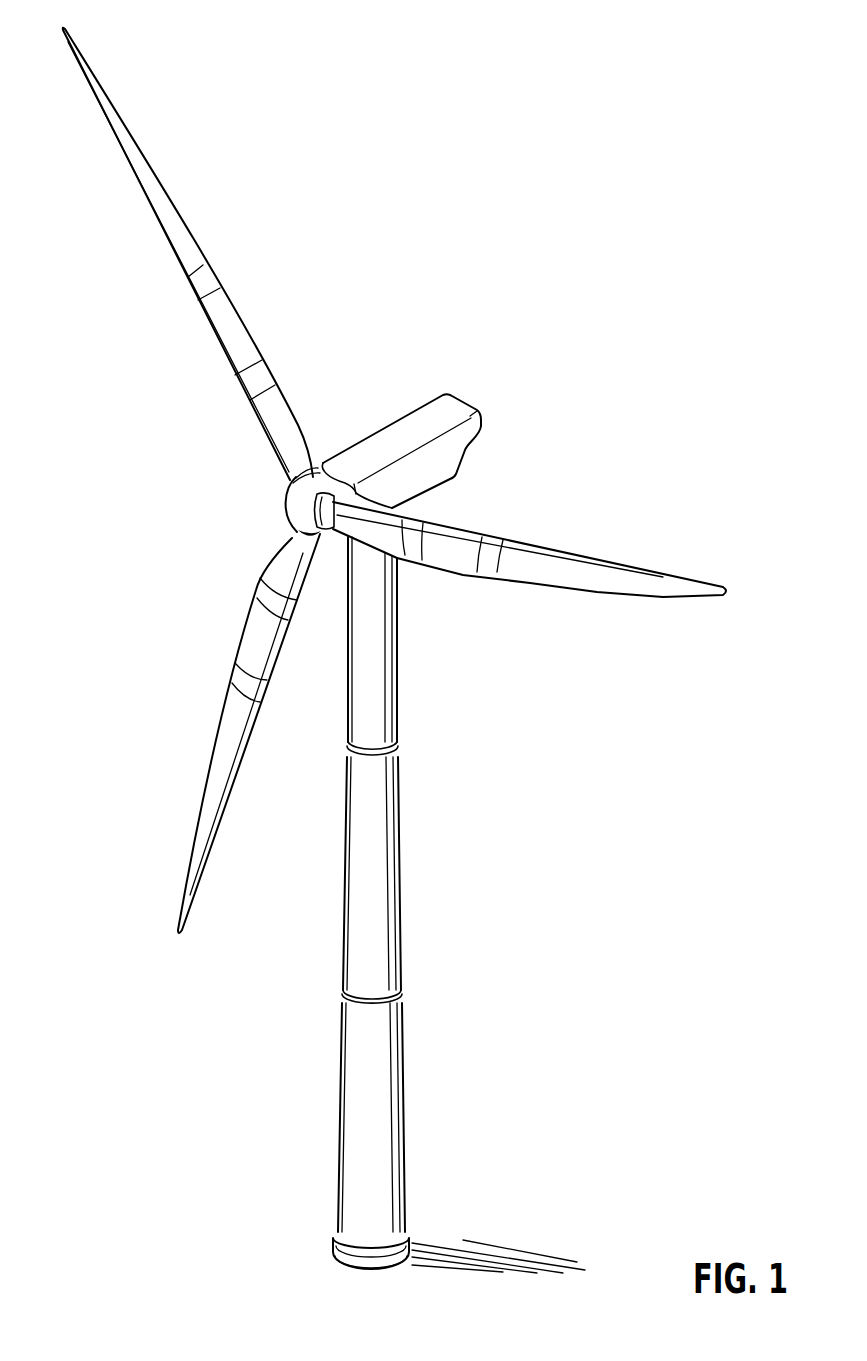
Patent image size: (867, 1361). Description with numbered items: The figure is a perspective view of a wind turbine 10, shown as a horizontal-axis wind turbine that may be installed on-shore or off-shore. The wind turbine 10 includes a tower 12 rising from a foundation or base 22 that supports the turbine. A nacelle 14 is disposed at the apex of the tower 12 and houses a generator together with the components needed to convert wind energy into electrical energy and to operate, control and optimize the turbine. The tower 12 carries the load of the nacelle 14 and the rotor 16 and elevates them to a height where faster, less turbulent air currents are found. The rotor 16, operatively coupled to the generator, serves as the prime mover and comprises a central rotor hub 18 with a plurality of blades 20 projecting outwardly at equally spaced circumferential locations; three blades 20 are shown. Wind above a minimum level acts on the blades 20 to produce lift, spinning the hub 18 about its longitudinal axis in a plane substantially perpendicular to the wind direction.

The wind turbine 10 is at (581, 282).
The tower 12 is at (398, 846).
The nacelle 14 is at (417, 418).
The rotor 16 is at (278, 516).
The central rotor hub 18 is at (290, 507).
The blades 20 is at (190, 236).
The foundation or base 22 is at (336, 1243).